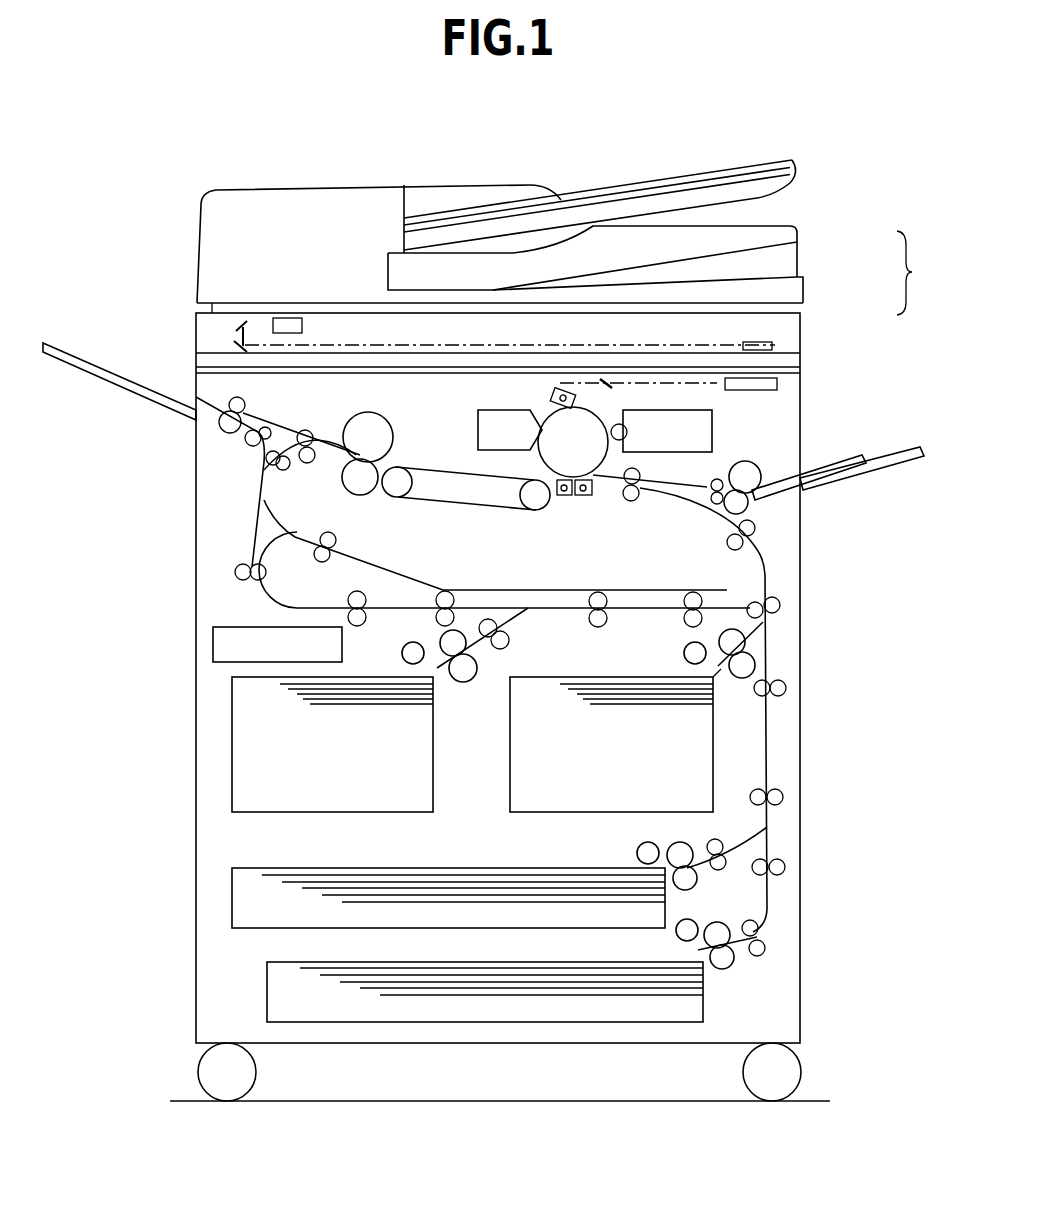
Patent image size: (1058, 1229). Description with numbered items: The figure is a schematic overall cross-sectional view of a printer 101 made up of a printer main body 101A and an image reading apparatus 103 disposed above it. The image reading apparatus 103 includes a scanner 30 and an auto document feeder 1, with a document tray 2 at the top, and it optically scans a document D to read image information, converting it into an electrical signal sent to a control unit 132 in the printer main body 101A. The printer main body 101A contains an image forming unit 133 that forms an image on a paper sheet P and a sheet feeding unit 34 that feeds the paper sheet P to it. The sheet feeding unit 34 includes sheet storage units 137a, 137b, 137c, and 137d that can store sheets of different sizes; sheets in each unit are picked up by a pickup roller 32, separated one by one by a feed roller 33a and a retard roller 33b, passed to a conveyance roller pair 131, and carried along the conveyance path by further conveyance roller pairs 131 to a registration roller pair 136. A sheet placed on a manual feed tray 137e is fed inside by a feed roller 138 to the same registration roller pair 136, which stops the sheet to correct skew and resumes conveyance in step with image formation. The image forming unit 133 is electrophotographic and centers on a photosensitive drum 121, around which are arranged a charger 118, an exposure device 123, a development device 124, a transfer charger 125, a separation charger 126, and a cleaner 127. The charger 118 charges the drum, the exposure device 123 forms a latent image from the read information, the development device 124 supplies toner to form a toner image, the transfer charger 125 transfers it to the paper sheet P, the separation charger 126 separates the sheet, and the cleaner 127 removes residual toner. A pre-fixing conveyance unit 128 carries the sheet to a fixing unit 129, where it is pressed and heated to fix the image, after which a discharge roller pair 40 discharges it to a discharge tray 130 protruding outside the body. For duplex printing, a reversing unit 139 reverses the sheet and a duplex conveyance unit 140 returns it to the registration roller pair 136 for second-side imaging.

The printer 101 is at (557, 149).
The image reading apparatus 103 is at (930, 273).
The auto document feeder 1 is at (818, 260).
The scanner 30 is at (818, 320).
The printer main body 101A is at (818, 376).
The document tray 2 is at (786, 165).
The document D is at (677, 178).
The charger 118 is at (565, 390).
The photosensitive drum 121 is at (548, 408).
The cleaner 127 is at (478, 425).
The image forming unit 133 is at (515, 462).
The fixing unit 129 is at (358, 422).
The discharge tray 130 is at (133, 398).
The discharge roller pair 40 is at (236, 446).
The exposure device 123 is at (765, 391).
The development device 124 is at (713, 432).
The feed roller 138 is at (760, 470).
The manual feed tray 137e is at (880, 470).
The reversing unit 139 is at (383, 568).
The pre-fixing conveyance unit 128 is at (468, 468).
The separation charger 126 is at (562, 497).
The transfer charger 125 is at (583, 497).
The registration roller pair 136 is at (637, 502).
The duplex conveyance unit 140 is at (263, 603).
The sheet feeding unit 34 is at (790, 578).
The conveyance roller pair 131 is at (782, 607).
The control unit 132 is at (213, 645).
The sheet storage unit 137c is at (232, 735).
The sheet storage unit 137d is at (714, 752).
The sheet storage unit 137b is at (232, 900).
The sheet storage unit 137a is at (267, 990).
The feed roller 33a is at (442, 640).
The retard roller 33b is at (465, 684).
The pickup roller 32 is at (403, 653).
The paper sheet P is at (600, 675).